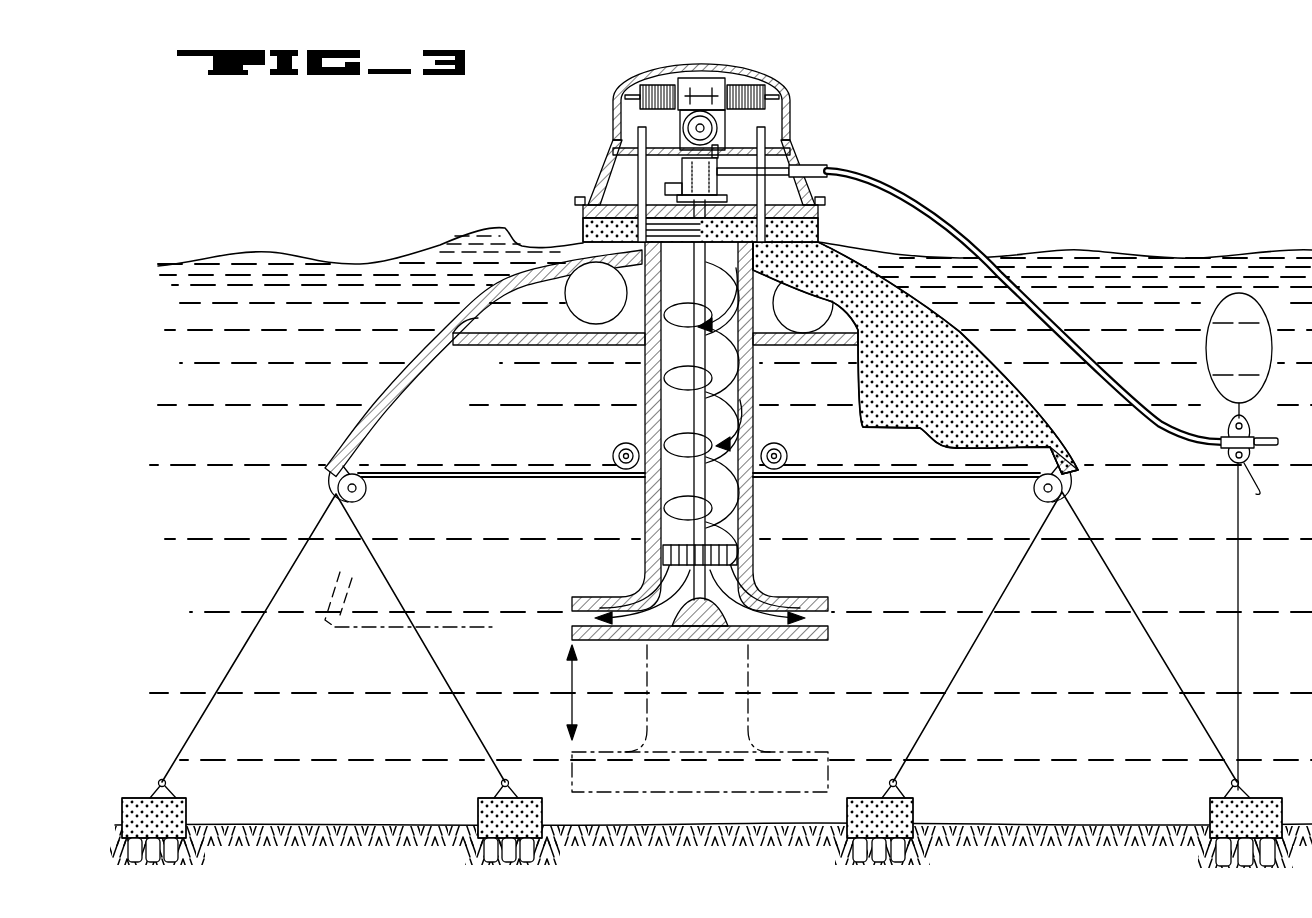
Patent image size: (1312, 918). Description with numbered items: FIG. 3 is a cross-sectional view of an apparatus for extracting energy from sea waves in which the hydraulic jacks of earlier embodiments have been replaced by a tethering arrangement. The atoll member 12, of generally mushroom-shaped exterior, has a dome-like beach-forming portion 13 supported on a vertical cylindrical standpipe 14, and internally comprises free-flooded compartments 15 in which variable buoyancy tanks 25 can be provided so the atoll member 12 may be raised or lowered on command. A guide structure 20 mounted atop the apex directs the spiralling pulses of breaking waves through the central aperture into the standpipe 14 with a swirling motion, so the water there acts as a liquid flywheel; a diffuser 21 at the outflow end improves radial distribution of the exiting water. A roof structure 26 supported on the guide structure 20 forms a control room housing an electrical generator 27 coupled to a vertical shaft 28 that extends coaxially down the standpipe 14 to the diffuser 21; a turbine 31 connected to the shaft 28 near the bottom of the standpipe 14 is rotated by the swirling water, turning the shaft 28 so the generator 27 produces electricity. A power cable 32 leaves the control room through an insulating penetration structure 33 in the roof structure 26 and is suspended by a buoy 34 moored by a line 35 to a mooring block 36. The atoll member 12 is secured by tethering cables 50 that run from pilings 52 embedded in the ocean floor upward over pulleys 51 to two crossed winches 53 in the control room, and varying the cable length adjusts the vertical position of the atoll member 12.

The atoll member 12 is at (378, 352).
The beach-forming portion 13 is at (445, 328).
The standpipe 14 is at (648, 552).
The free-flooded compartments 15 is at (537, 324).
The guide structure 20 is at (608, 232).
The diffuser 21 is at (828, 603).
The variable buoyancy tanks 25 is at (608, 304).
The roof structure 26 is at (638, 98).
The electrical generator 27 is at (682, 178).
The vertical shaft 28 is at (697, 347).
The turbine 31 is at (678, 545).
The power cable 32 is at (898, 190).
The penetration structure 33 is at (815, 166).
The buoy 34 is at (1251, 360).
The line 35 is at (1226, 626).
The mooring block 36 is at (1263, 800).
The tethering cables 50 is at (286, 592).
The pulleys 51 is at (615, 450).
The pilings 52 is at (182, 798).
The winches 53 is at (668, 100).